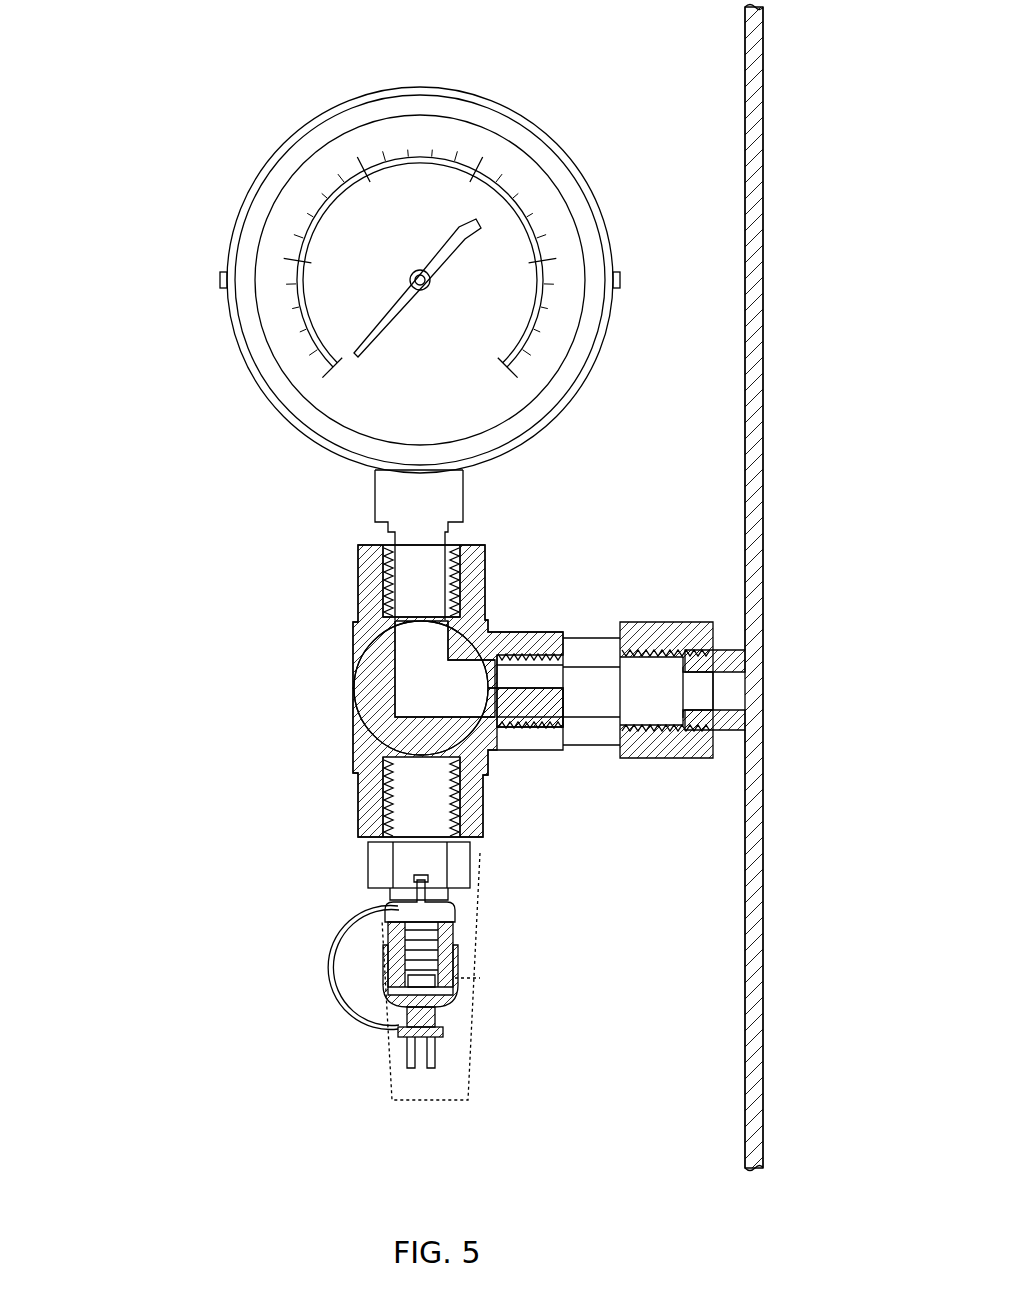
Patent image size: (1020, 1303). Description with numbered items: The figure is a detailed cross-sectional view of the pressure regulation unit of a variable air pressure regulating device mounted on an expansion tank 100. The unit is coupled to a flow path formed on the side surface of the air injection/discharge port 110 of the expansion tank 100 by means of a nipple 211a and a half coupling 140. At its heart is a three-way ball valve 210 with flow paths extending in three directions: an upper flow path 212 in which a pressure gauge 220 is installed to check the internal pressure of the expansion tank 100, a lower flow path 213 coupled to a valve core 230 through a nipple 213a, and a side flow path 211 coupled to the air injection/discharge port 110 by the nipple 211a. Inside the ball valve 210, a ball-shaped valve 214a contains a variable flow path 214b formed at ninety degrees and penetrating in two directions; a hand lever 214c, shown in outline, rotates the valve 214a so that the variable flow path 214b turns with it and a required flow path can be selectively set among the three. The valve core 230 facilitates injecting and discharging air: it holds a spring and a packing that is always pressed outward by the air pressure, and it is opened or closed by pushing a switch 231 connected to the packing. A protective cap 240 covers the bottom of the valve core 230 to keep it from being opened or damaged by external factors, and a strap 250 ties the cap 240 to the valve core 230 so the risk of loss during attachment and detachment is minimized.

The expansion tank 100 is at (748, 458).
The air injection/discharge port 110 is at (728, 730).
The half coupling 140 is at (653, 630).
The three-way ball valve 210 is at (335, 735).
The side flow path 211 is at (517, 752).
The nipple 211a is at (585, 645).
The upper flow path 212 is at (357, 570).
The lower flow path 213 is at (357, 797).
The nipple 213a is at (458, 863).
The valve 214a is at (355, 695).
The variable flow path 214b is at (357, 642).
The hand lever 214c is at (473, 1037).
The pressure gauge 220 is at (317, 230).
The valve core 230 is at (457, 907).
The switch 231 is at (457, 992).
The protective cap 240 is at (397, 1043).
The strap 250 is at (332, 967).